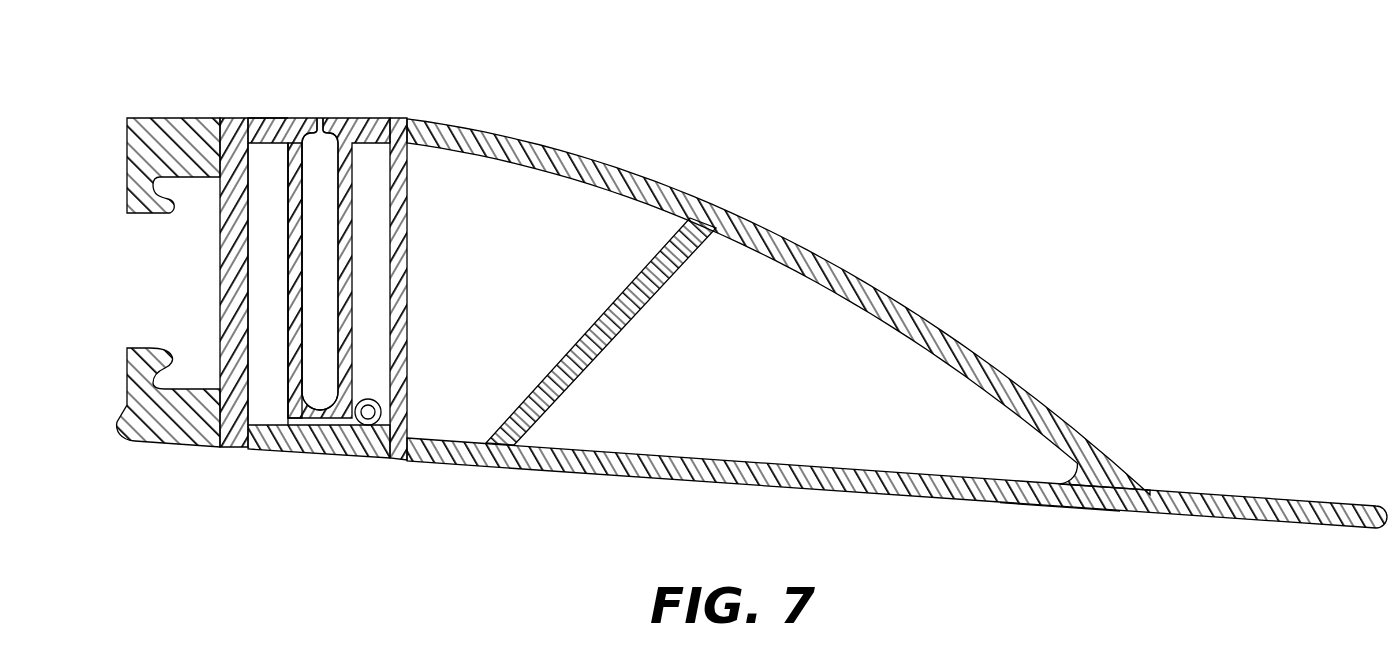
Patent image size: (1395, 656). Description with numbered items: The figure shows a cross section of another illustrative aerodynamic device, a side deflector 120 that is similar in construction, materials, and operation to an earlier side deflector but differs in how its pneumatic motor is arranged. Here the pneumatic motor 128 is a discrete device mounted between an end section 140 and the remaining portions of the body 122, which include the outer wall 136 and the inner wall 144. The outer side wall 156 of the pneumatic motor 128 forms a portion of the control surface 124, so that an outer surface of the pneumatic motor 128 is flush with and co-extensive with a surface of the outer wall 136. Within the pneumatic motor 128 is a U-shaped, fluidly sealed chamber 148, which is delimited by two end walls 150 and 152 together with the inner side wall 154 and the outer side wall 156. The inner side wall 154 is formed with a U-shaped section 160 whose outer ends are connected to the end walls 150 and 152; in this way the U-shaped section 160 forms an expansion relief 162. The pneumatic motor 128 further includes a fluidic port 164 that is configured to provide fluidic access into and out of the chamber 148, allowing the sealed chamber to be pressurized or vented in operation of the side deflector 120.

The side deflector 120 is at (897, 341).
The body 122 is at (665, 183).
The control surface 124 is at (1050, 504).
The pneumatic motor 128 is at (370, 118).
The outer wall 136 is at (840, 487).
The end section 140 is at (140, 145).
The inner wall 144 is at (830, 267).
The chamber 148 is at (263, 282).
The end wall 150 is at (220, 243).
The end wall 152 is at (410, 277).
The inner side wall 154 is at (283, 118).
The outer side wall 156 is at (317, 457).
The U-shaped section 160 is at (293, 180).
The expansion relief 162 is at (317, 118).
The fluidic port 164 is at (368, 426).